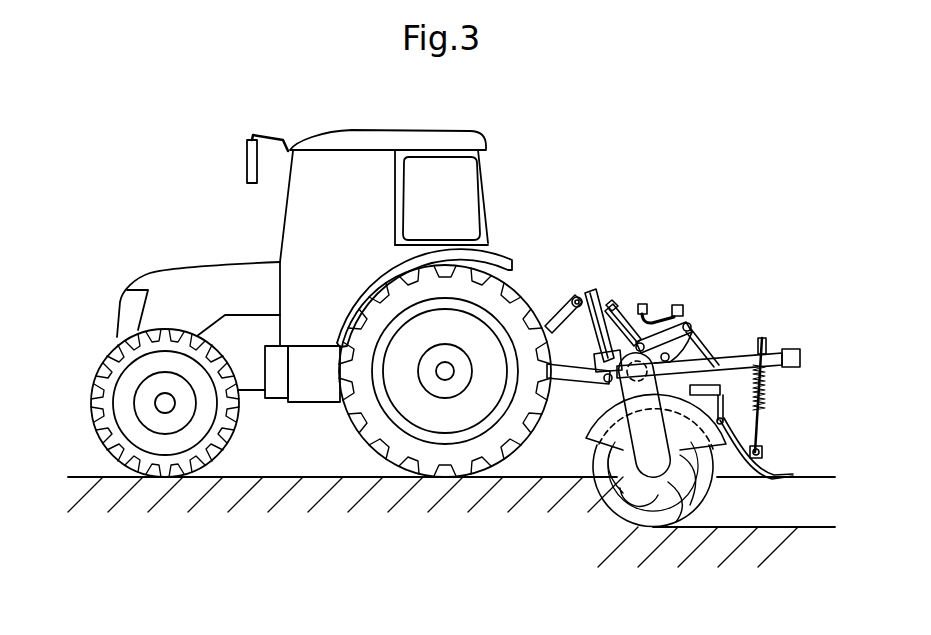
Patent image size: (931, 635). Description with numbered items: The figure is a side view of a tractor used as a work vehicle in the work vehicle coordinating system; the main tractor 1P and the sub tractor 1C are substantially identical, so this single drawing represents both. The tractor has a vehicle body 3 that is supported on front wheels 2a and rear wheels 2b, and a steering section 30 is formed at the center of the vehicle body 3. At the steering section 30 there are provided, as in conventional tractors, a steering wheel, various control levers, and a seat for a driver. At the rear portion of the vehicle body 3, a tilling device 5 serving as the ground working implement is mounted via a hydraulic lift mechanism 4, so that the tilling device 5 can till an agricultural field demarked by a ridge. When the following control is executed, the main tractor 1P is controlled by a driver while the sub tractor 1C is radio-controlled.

The vehicle body 3 is at (209, 237).
The steering section 30 is at (339, 185).
The main tractor 1P is at (411, 117).
The sub tractor 1C is at (413, 111).
The front wheels 2a is at (93, 441).
The rear wheels 2b is at (360, 428).
The hydraulic lift mechanism 4 is at (571, 271).
The tilling device 5 is at (721, 319).